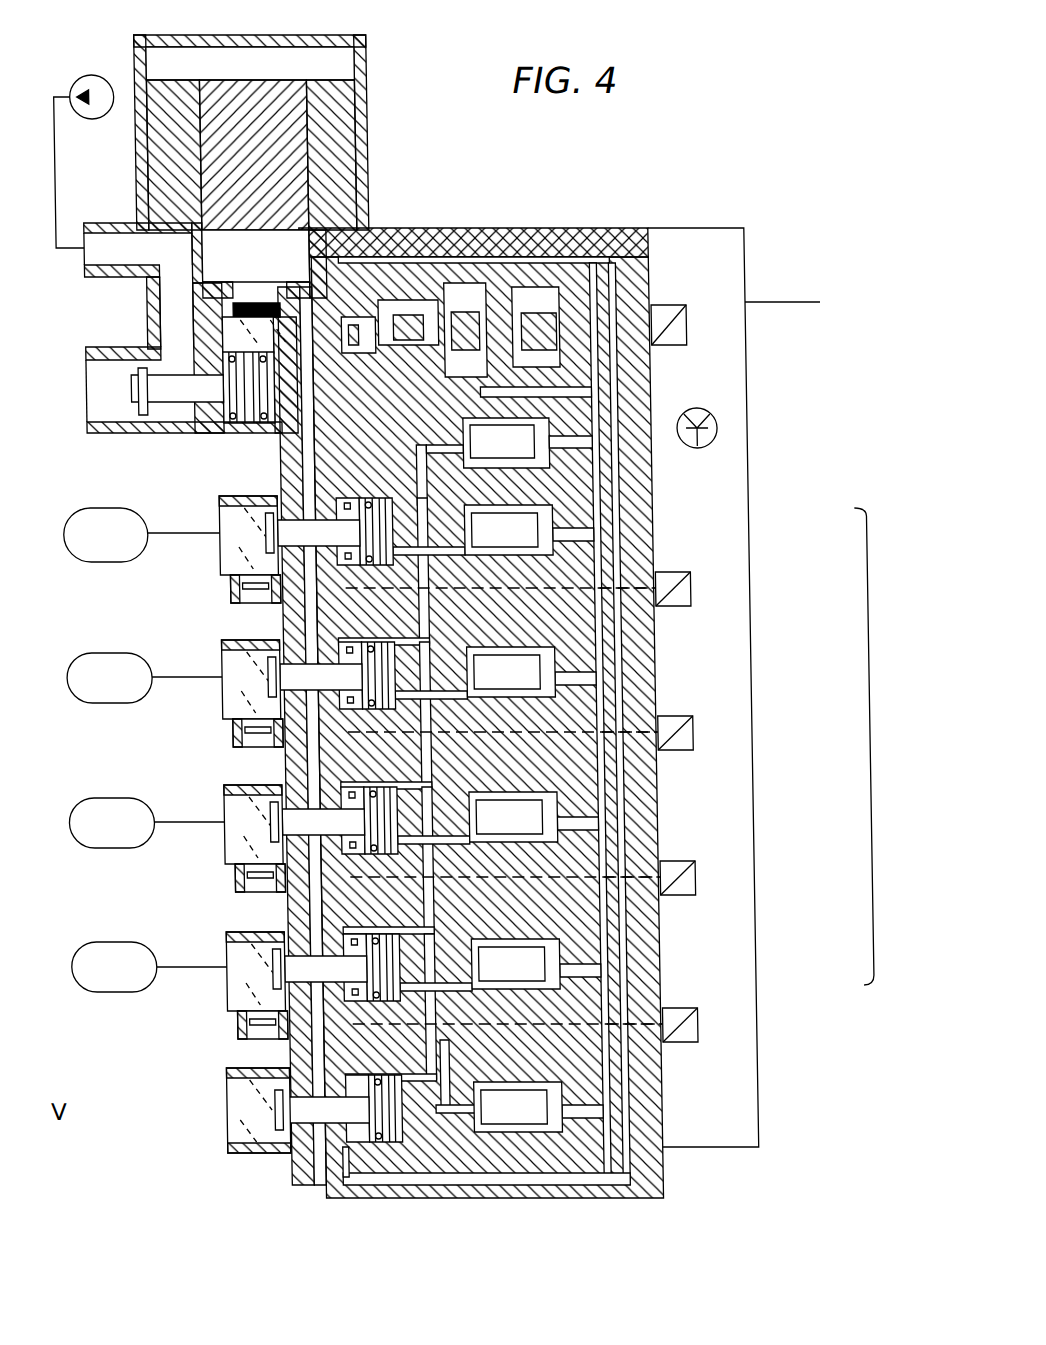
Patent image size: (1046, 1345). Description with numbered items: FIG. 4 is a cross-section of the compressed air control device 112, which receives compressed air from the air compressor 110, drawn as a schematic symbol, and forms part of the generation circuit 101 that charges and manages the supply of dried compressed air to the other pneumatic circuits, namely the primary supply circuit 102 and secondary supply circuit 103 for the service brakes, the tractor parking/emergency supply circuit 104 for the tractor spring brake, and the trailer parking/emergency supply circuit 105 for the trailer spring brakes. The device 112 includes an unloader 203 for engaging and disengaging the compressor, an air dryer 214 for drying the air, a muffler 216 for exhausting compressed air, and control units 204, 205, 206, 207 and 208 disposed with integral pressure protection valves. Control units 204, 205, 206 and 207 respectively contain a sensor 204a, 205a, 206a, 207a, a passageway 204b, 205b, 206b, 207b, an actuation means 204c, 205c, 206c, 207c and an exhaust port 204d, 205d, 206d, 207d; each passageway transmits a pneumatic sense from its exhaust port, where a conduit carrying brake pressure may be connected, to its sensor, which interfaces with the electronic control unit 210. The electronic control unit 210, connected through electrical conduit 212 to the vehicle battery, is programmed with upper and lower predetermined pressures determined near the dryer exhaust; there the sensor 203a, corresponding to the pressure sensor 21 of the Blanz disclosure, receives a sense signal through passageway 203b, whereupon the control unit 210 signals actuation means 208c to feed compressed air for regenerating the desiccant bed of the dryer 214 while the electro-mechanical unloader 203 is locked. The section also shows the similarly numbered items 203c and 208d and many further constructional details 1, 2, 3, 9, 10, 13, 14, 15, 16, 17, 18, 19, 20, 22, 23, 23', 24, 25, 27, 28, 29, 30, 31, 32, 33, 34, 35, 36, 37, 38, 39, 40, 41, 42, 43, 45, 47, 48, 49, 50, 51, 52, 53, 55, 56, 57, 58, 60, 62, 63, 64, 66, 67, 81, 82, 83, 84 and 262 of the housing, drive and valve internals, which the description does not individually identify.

The drive unit 1 is at (429, 233).
The pump unit 2 is at (96, 440).
The motor 3 is at (490, 215).
The hydraulic fluid 9 is at (367, 100).
The suction chamber 10 is at (126, 243).
The partition wall 13 is at (175, 262).
The pump housing 14 is at (125, 345).
The inlet chamber 15 is at (272, 266).
The pump shaft 16 is at (133, 398).
The housing bottom wall 17 is at (112, 426).
The housing top wall 18 is at (122, 382).
The pump element 19 is at (128, 440).
The pressure line 20 is at (592, 400).
The pressure sensor 21 is at (687, 325).
The housing side wall 22 is at (298, 468).
The bearing 23 is at (243, 412).
The bearing 23' is at (191, 434).
The bearing block 24 is at (178, 392).
The coupling 25 is at (335, 420).
The pressure channel 27 is at (425, 462).
The pressure gauge 28 is at (656, 410).
The passage 29 is at (390, 470).
The return channel 30 is at (646, 1162).
The motor housing 31 is at (494, 236).
The motor shaft 32 is at (554, 236).
The gear 33 is at (347, 245).
The rotor 34 is at (448, 236).
The gap 35 is at (473, 268).
The pinion 36 is at (341, 250).
The stator 37 is at (533, 236).
The gear pump 38 is at (337, 372).
The pump gear 39 is at (430, 352).
The gear wheel 40 is at (327, 360).
The motor end wall 41 is at (600, 233).
The drive gear 42 is at (357, 230).
The inlet opening 43 is at (318, 275).
The valve block 45 is at (861, 985).
The valve seat 47 is at (264, 518).
The valve plate 48 is at (246, 515).
The valve housing 49 is at (242, 505).
The rotor body 50 is at (396, 580).
The rotor 51 is at (362, 590).
The outlet channel 52 is at (279, 598).
The pressure channel 53 is at (548, 500).
The connecting channel 55 is at (474, 572).
The supply channel 56 is at (594, 548).
The slot 57 is at (442, 580).
The bearing 58 is at (379, 520).
The return line 60 is at (598, 617).
The housing 62 is at (756, 229).
The mounting flange 63 is at (760, 302).
The bottom channel 64 is at (448, 1127).
The return channel 66 is at (652, 800).
The shaft 67 is at (442, 235).
The pressure connection 81 is at (656, 258).
The pump housing 82 is at (584, 233).
The pressure line 83 is at (672, 296).
The pressure channel 84 is at (614, 385).
The generation circuit 101 is at (59, 148).
The primary supply circuit 102 is at (104, 542).
The secondary supply circuit 103 is at (100, 696).
The tractor parking/emergency supply circuit 104 is at (98, 842).
The trailer parking/emergency supply circuit 105 is at (98, 986).
The air compressor 110 is at (97, 75).
The compressed air control device 112 is at (304, 121).
The unloader 203 is at (822, 192).
The sensor 203a is at (718, 262).
The passageway 203b is at (640, 262).
The pump element 203c is at (523, 452).
The control unit 204 is at (764, 522).
The sensor 204a is at (688, 590).
The passageway 204b is at (636, 585).
The actuation means 204c is at (524, 539).
The exhaust port 204d is at (248, 530).
The control unit 205 is at (762, 668).
The sensor 205a is at (688, 735).
The passageway 205b is at (636, 730).
The actuation means 205c is at (524, 681).
The exhaust port 205d is at (246, 680).
The control unit 206 is at (760, 820).
The sensor 206a is at (688, 880).
The passageway 206b is at (636, 875).
The actuation means 206c is at (524, 826).
The exhaust port 206d is at (246, 825).
The control unit 207 is at (758, 962).
The sensor 207a is at (688, 1026).
The passageway 207b is at (636, 1020).
The actuation means 207c is at (524, 973).
The exhaust port 207d is at (246, 972).
The control unit 208 is at (250, 1165).
The actuation means 208c is at (524, 1116).
The outlet valve 208d is at (246, 1112).
The electronic control unit 210 is at (749, 263).
The electrical conduit 212 is at (808, 302).
The air dryer 214 is at (252, 125).
The muffler 216 is at (128, 384).
The wall 262 is at (392, 205).